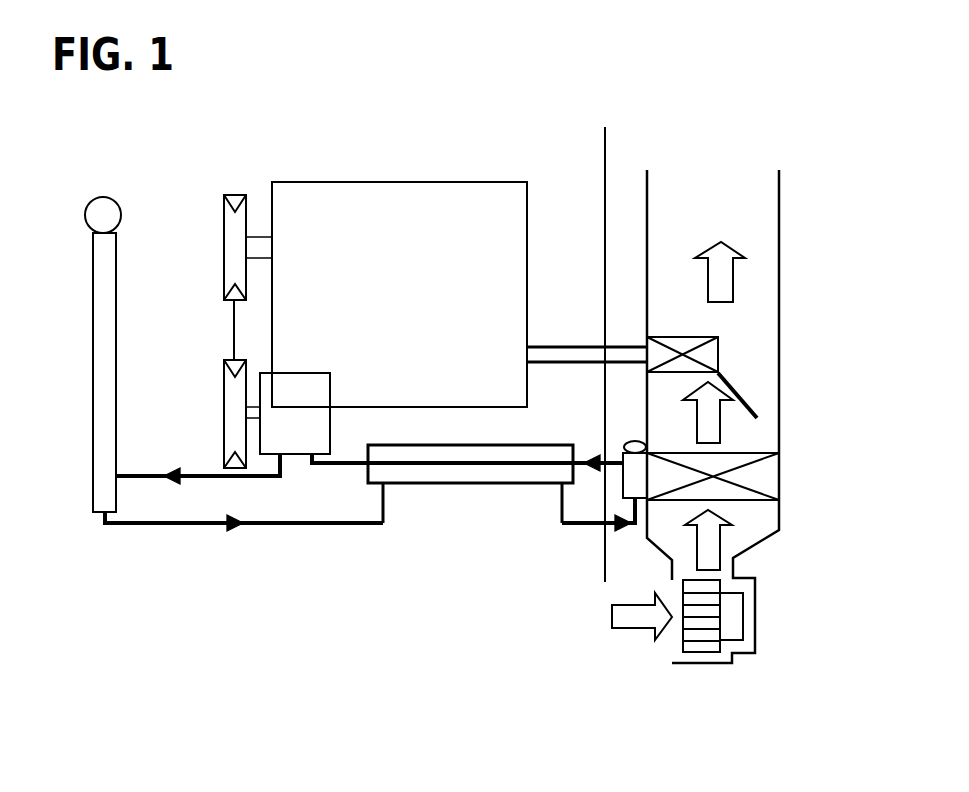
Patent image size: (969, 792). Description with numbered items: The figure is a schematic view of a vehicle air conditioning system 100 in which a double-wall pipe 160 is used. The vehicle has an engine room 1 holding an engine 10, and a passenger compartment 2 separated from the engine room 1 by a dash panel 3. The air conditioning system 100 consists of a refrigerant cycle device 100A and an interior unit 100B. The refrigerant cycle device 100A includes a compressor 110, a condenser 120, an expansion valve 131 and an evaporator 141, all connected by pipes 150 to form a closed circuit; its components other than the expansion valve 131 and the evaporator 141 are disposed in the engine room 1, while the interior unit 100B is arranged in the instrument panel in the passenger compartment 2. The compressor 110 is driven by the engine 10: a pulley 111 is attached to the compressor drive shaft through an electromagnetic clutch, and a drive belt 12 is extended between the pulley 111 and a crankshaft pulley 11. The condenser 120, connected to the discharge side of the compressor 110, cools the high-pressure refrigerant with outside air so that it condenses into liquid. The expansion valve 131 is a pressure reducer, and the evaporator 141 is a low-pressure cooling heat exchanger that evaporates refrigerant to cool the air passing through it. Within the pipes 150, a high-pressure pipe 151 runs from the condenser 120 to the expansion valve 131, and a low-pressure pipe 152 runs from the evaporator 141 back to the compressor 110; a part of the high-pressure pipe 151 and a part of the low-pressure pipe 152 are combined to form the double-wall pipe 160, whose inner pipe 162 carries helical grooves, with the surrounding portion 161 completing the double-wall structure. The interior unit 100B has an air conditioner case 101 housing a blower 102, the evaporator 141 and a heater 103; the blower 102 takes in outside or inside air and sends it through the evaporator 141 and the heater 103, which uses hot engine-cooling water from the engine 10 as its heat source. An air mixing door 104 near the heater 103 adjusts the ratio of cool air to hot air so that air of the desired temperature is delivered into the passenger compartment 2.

The engine room 1 is at (583, 130).
The passenger compartment 2 is at (626, 140).
The dash panel 3 is at (604, 127).
The engine 10 is at (296, 190).
The crankshaft pulley 11 is at (227, 220).
The drive belt 12 is at (234, 322).
The air conditioning system 100 is at (448, 647).
The refrigerant cycle device 100A is at (233, 540).
The interior unit 100B is at (792, 221).
The air conditioner case 101 is at (779, 285).
The blower 102 is at (740, 620).
The heater 103 is at (713, 355).
The air mixing door 104 is at (755, 408).
The compressor 110 is at (262, 381).
The pulley 111 is at (232, 403).
The condenser 120 is at (93, 372).
The expansion valve 131 is at (641, 498).
The evaporator 141 is at (770, 480).
The pipes 150 is at (118, 476).
The high-pressure pipe 151 is at (122, 530).
The low-pressure pipe 152 is at (347, 462).
The double-wall pipe 160 is at (405, 495).
The heat exchanger casing 161 is at (428, 485).
The inner pipe 162 is at (470, 466).